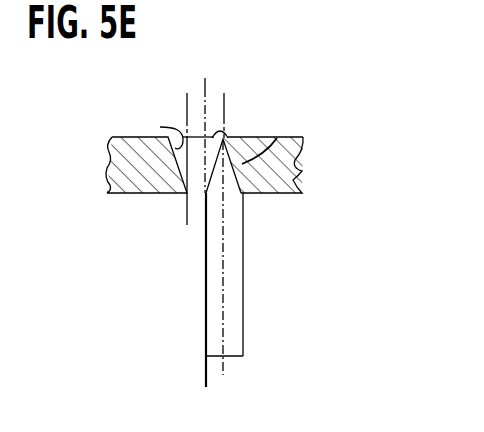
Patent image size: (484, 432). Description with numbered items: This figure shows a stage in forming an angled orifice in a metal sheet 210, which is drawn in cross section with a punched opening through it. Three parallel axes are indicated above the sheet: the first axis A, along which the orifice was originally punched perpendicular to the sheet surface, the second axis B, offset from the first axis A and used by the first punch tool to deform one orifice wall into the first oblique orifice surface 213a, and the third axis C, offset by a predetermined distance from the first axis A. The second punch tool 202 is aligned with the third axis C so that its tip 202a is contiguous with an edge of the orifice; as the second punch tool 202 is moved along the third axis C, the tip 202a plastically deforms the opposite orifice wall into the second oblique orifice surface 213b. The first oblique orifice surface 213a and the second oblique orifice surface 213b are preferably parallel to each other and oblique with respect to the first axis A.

The metal sheet 210 is at (293, 195).
The second punch tool 202 is at (233, 329).
The tip 202a is at (213, 137).
The first oblique orifice surface 213a is at (160, 127).
The second oblique orifice surface 213b is at (277, 138).
The first axis A is at (207, 88).
The second axis B is at (187, 108).
The third axis C is at (226, 108).